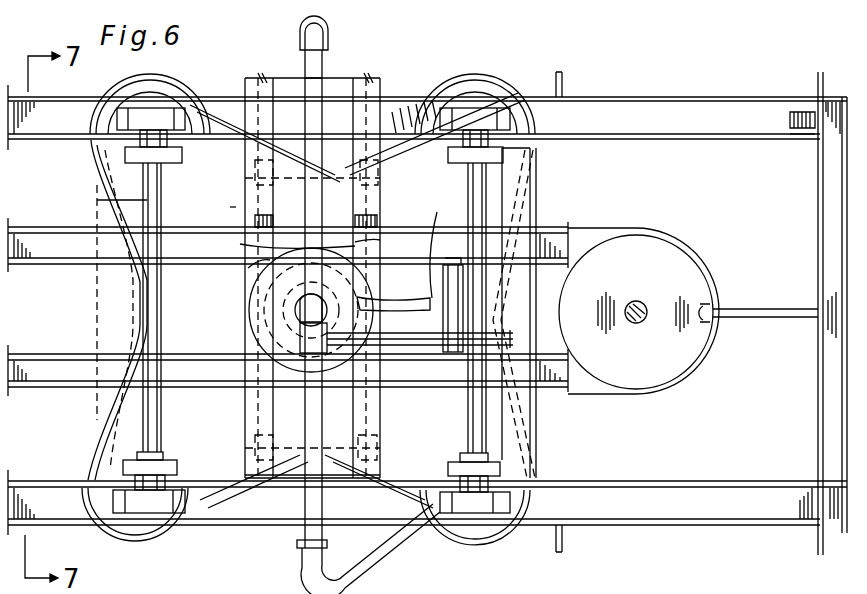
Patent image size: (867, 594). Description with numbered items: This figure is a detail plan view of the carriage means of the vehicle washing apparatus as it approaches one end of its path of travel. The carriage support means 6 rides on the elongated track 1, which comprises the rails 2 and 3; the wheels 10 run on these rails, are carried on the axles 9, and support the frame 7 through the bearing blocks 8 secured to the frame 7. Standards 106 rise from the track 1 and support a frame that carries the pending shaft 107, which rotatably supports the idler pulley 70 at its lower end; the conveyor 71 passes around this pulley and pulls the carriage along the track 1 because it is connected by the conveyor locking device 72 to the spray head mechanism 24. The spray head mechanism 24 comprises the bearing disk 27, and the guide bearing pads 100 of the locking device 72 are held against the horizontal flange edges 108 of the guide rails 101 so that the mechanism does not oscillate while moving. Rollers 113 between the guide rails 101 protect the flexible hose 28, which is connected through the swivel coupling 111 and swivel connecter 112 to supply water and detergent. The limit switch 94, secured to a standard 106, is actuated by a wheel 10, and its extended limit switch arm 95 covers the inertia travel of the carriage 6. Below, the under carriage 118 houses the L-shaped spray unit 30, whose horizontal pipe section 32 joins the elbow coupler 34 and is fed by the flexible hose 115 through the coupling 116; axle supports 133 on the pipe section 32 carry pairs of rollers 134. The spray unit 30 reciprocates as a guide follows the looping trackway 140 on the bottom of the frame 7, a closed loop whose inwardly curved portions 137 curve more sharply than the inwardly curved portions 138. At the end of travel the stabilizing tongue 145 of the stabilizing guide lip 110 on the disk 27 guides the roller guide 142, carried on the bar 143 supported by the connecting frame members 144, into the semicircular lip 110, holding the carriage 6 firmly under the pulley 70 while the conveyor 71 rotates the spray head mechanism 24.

The elongated track 1 is at (645, 98).
The rail 2 is at (690, 112).
The rail 3 is at (633, 495).
The carriage support means 6 is at (232, 207).
The carriage support means frame 7 is at (122, 200).
The bearing block 8 is at (180, 153).
The axle 9 is at (152, 185).
The wheel 10 is at (141, 117).
The spray head mechanism 24 is at (413, 288).
The bearing disk 27 is at (276, 322).
The flexible hose 28 is at (512, 338).
The spray unit 30 is at (305, 62).
The horizontal pipe section 32 is at (325, 52).
The elbow coupler 34 is at (326, 28).
The idler pulley 70 is at (671, 252).
The conveyor 71 is at (618, 230).
The conveyor locking device 72 is at (372, 222).
The limit switch 94 is at (790, 120).
The limit switch arm 95 is at (797, 138).
The guide bearing pad 100 is at (360, 244).
The guide rail 101 is at (570, 233).
The standard 106 is at (562, 80).
The pending shaft 107 is at (636, 301).
The horizontal flange edge 108 is at (545, 233).
The stabilizing guide lip 110 is at (300, 218).
The swivel coupling 111 is at (286, 300).
The swivel connecter 112 is at (298, 338).
The roller 113 is at (478, 305).
The flexible hose 115 is at (372, 575).
The coupling 116 is at (300, 556).
The under carriage 118 is at (250, 90).
The axle support 133 is at (362, 165).
The roller 134 is at (258, 188).
The inwardly curved portion 137 is at (297, 473).
The inwardly curved portion 138 is at (125, 305).
The looping trackway 140 is at (485, 78).
The roller guide 142 is at (708, 330).
The bar 143 is at (742, 309).
The connecting frame member 144 is at (818, 382).
The stabilizing tongue 145 is at (438, 250).